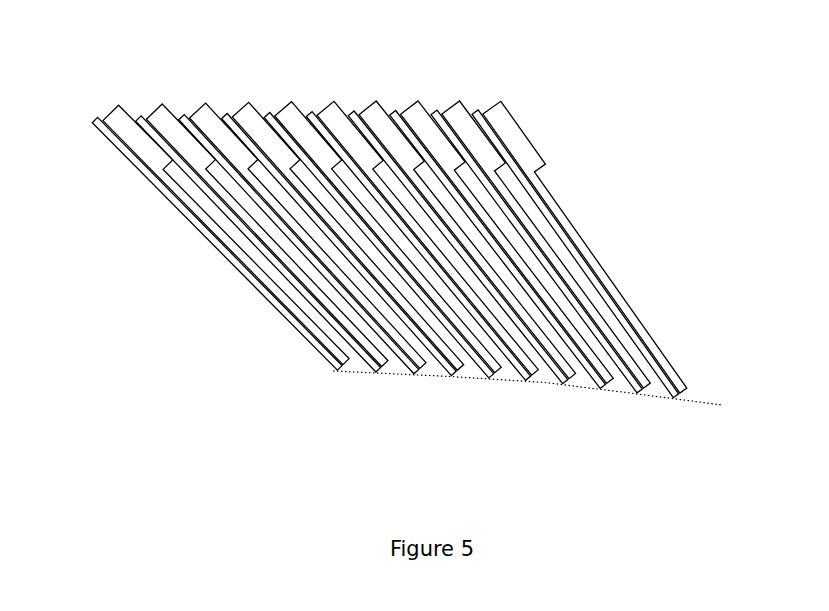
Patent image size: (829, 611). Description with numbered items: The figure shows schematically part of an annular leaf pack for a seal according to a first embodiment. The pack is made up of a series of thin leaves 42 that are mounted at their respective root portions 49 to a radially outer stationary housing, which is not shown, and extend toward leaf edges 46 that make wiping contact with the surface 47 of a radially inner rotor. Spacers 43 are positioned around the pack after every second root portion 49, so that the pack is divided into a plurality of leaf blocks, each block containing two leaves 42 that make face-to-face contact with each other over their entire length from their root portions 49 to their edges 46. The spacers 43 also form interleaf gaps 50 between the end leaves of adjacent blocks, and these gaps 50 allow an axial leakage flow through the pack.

The leaf 42 is at (272, 297).
The spacer 43 is at (165, 120).
The leaf edge 46 is at (645, 388).
The surface 47 is at (698, 404).
The root portion 49 is at (328, 125).
The interleaf gap 50 is at (195, 195).